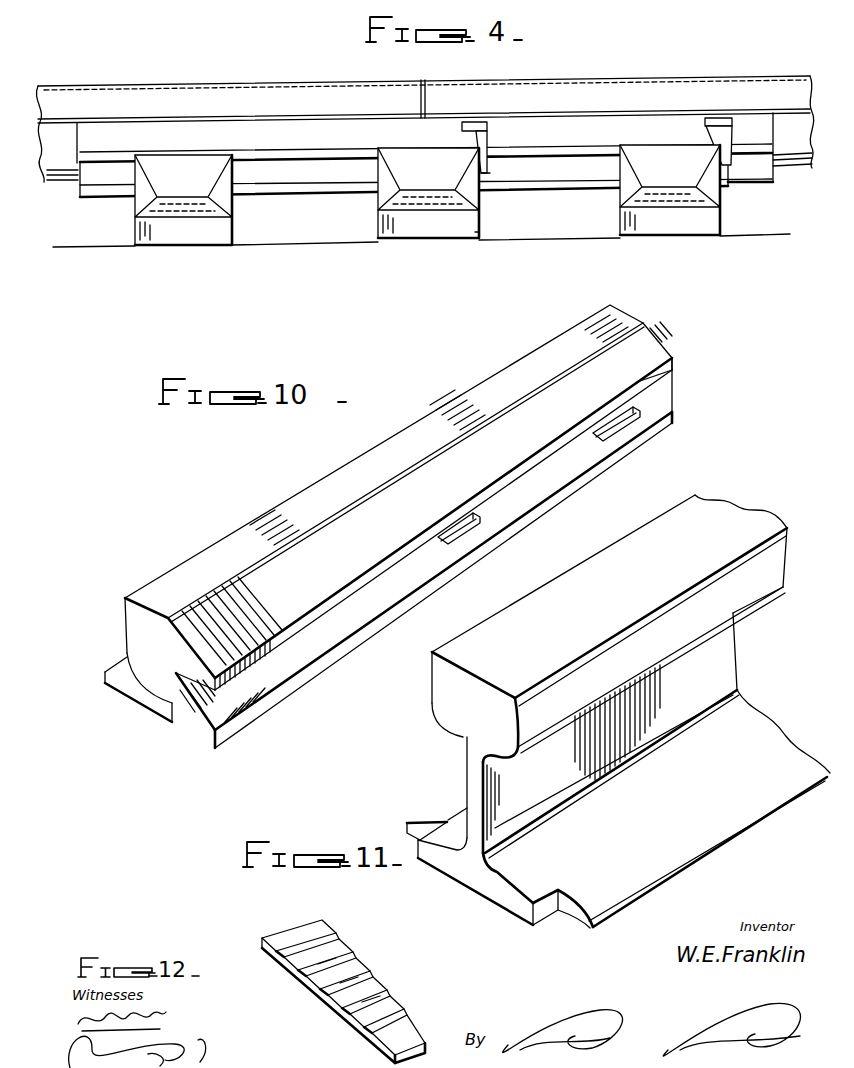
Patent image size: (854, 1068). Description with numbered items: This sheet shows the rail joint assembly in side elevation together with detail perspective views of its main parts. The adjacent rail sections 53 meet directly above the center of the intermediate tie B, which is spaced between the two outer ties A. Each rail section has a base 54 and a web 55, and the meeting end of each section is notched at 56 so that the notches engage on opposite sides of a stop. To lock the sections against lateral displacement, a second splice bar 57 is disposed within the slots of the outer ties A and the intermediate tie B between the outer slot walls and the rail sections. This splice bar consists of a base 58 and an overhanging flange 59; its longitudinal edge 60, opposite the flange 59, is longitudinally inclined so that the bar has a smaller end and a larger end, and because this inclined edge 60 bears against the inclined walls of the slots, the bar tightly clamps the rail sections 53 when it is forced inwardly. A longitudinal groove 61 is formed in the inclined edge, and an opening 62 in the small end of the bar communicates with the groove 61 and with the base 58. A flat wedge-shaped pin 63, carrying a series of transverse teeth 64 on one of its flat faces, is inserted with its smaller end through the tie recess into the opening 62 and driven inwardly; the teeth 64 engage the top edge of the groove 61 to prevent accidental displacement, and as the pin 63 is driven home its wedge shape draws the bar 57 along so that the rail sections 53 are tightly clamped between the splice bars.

In FIG. 4, the rail sections 53 is at (277, 93).
In FIG. 11, the rail sections 53 is at (746, 520).
In FIG. 4, the base 54 is at (808, 170).
In FIG. 11, the base 54 is at (738, 829).
In FIG. 4, the web 55 is at (62, 160).
In FIG. 11, the web 55 is at (735, 654).
In FIG. 11, the notches 56 is at (420, 822).
In FIG. 4, the second splice bar 57 is at (338, 143).
In FIG. 10, the second splice bar 57 is at (625, 321).
In FIG. 10, the base 58 is at (146, 702).
In FIG. 10, the overhanging flange 59 is at (132, 627).
In FIG. 4, the longitudinal edge 60 is at (590, 186).
In FIG. 10, the longitudinal edge 60 is at (318, 676).
In FIG. 4, the longitudinal groove 61 is at (551, 172).
In FIG. 10, the longitudinal groove 61 is at (214, 713).
In FIG. 4, the opening 62 is at (487, 176).
In FIG. 10, the opening 62 is at (479, 526).
In FIG. 4, the wedge-shaped pin 63 is at (490, 129).
In FIG. 12, the wedge-shaped pin 63 is at (327, 930).
In FIG. 12, the transverse teeth 64 is at (378, 984).
In FIG. 4, the outer ties A is at (241, 225).
In FIG. 4, the intermediate tie B is at (475, 238).